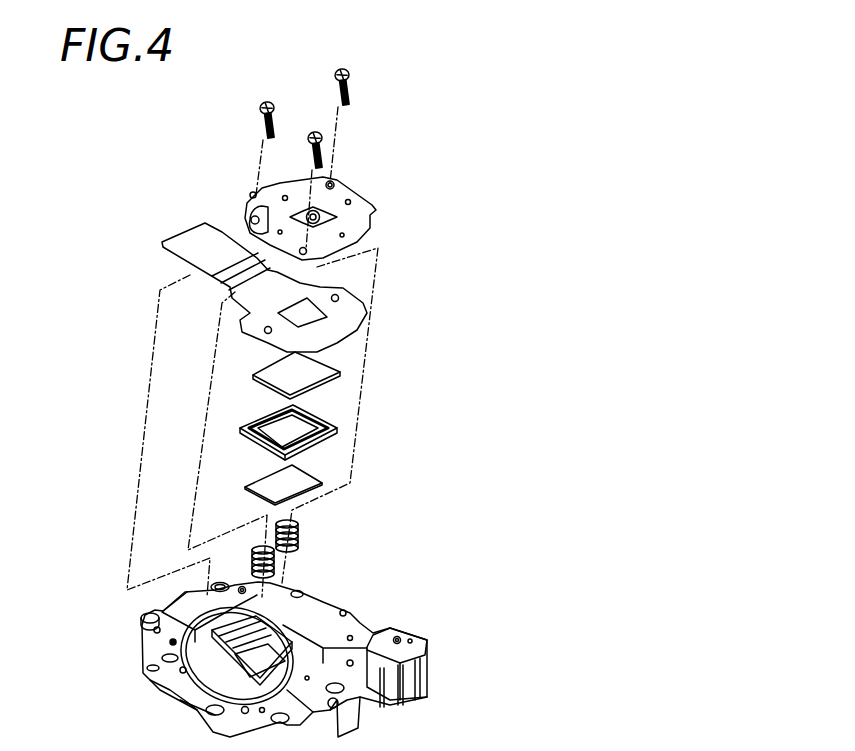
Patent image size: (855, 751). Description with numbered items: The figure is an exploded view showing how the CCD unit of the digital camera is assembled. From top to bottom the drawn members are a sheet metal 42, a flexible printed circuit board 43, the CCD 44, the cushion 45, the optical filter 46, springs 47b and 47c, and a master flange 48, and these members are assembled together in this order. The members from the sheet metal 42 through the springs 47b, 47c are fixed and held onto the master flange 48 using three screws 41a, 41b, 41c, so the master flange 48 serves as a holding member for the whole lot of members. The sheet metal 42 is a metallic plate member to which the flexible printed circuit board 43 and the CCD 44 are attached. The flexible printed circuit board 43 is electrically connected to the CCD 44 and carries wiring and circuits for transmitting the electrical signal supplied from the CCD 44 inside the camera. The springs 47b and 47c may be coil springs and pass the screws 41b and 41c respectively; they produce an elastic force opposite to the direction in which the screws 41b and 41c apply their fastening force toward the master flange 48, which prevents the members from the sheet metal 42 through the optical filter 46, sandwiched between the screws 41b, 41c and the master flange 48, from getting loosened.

The screw 41a is at (260, 108).
The screw 41b is at (323, 138).
The screw 41c is at (350, 78).
The sheet metal 42 is at (355, 222).
The flexible printed circuit board 43 is at (340, 315).
The CCD 44 is at (330, 377).
The cushion 45 is at (330, 437).
The optical filter 46 is at (303, 487).
The spring 47b is at (277, 567).
The spring 47c is at (300, 535).
The master flange 48 is at (413, 630).